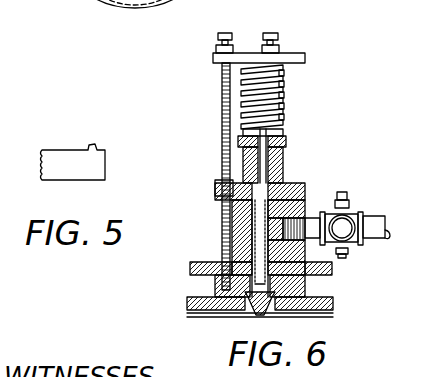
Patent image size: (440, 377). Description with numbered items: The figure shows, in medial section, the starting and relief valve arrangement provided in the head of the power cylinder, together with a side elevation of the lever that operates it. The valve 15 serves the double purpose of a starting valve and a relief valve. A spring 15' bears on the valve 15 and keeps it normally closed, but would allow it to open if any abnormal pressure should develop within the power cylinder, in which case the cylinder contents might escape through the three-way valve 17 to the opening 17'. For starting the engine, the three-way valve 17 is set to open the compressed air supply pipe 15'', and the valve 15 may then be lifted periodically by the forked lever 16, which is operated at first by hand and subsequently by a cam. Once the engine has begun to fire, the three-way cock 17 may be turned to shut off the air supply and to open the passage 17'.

In FIG. 6, the valve 15 is at (267, 250).
In FIG. 6, the spring 15' is at (281, 97).
In FIG. 6, the compressed air supply pipe 15'' is at (366, 218).
In FIG. 5, the forked lever 16 is at (95, 163).
In FIG. 6, the forked lever 16 is at (277, 162).
In FIG. 6, the three-way valve 17 is at (351, 219).
In FIG. 6, the opening 17' is at (230, 321).